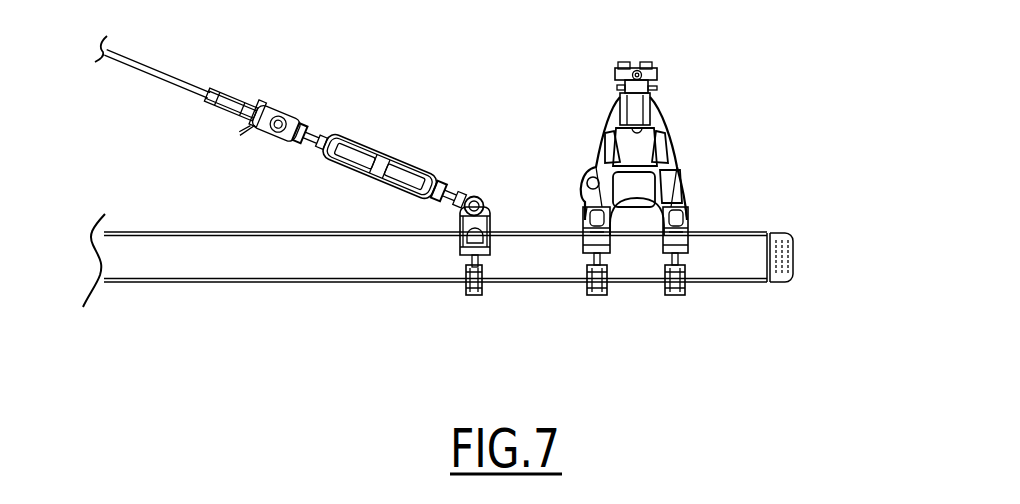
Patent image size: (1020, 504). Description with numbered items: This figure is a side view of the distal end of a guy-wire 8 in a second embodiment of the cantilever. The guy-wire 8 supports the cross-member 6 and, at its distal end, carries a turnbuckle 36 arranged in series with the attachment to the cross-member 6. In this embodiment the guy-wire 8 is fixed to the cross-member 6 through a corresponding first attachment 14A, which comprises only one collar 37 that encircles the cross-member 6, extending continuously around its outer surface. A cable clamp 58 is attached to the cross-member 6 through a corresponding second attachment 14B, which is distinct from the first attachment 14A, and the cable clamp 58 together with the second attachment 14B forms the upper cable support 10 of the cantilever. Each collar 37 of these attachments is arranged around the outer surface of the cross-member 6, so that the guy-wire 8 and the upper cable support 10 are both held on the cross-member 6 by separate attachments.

The guy-wire 8 is at (248, 76).
The turnbuckle 36 is at (407, 162).
The cable clamp 58 is at (657, 71).
The upper cable support 10 is at (777, 160).
The cross-member 6 is at (778, 227).
The first attachment 14A is at (470, 297).
The second attachment 14B is at (637, 307).
The collar 37 is at (496, 282).